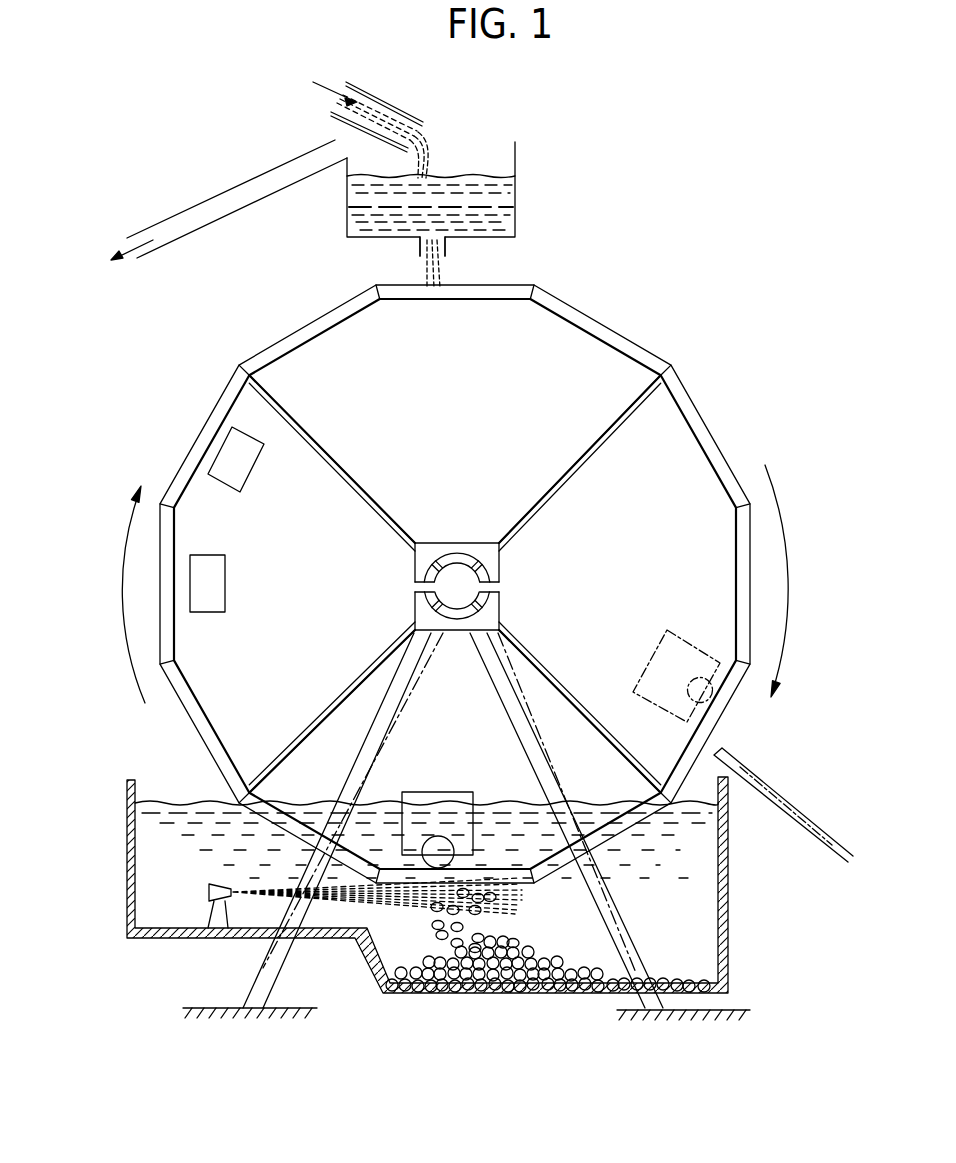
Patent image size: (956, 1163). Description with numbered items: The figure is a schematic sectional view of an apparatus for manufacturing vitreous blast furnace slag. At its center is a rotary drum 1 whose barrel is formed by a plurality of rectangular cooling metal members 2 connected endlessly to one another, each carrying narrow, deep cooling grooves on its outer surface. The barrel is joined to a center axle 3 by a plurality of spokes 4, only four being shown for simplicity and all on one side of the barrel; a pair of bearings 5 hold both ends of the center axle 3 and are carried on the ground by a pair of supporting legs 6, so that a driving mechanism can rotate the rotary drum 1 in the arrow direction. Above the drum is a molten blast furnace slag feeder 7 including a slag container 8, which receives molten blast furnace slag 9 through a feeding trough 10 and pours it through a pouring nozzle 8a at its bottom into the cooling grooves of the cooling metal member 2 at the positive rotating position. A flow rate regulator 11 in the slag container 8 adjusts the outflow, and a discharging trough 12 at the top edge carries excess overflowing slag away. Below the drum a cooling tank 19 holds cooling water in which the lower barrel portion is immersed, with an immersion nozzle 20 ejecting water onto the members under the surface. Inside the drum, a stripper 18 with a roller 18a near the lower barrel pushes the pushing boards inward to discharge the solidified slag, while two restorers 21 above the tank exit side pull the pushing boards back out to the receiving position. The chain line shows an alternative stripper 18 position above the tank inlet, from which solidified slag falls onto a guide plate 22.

The rotary drum 1 is at (448, 584).
The cooling metal members 2 is at (693, 402).
The center axle 3 is at (463, 585).
The spokes 4 is at (358, 487).
The bearings 5 is at (488, 612).
The supporting legs 6 is at (500, 686).
The molten blast furnace slag feeder 7 is at (465, 203).
The slag container 8 is at (515, 198).
The pouring nozzle 8a is at (447, 243).
The molten blast furnace slag 9 is at (425, 150).
The feeding trough 10 is at (413, 120).
The flow rate regulator 11 is at (357, 208).
The discharging trough 12 is at (217, 198).
The stripper 18 is at (687, 641).
The roller 18a is at (443, 850).
The cooling tank 19 is at (127, 883).
The immersion nozzle 20 is at (209, 910).
The restorer 21 is at (238, 467).
The guide plate 22 is at (722, 757).